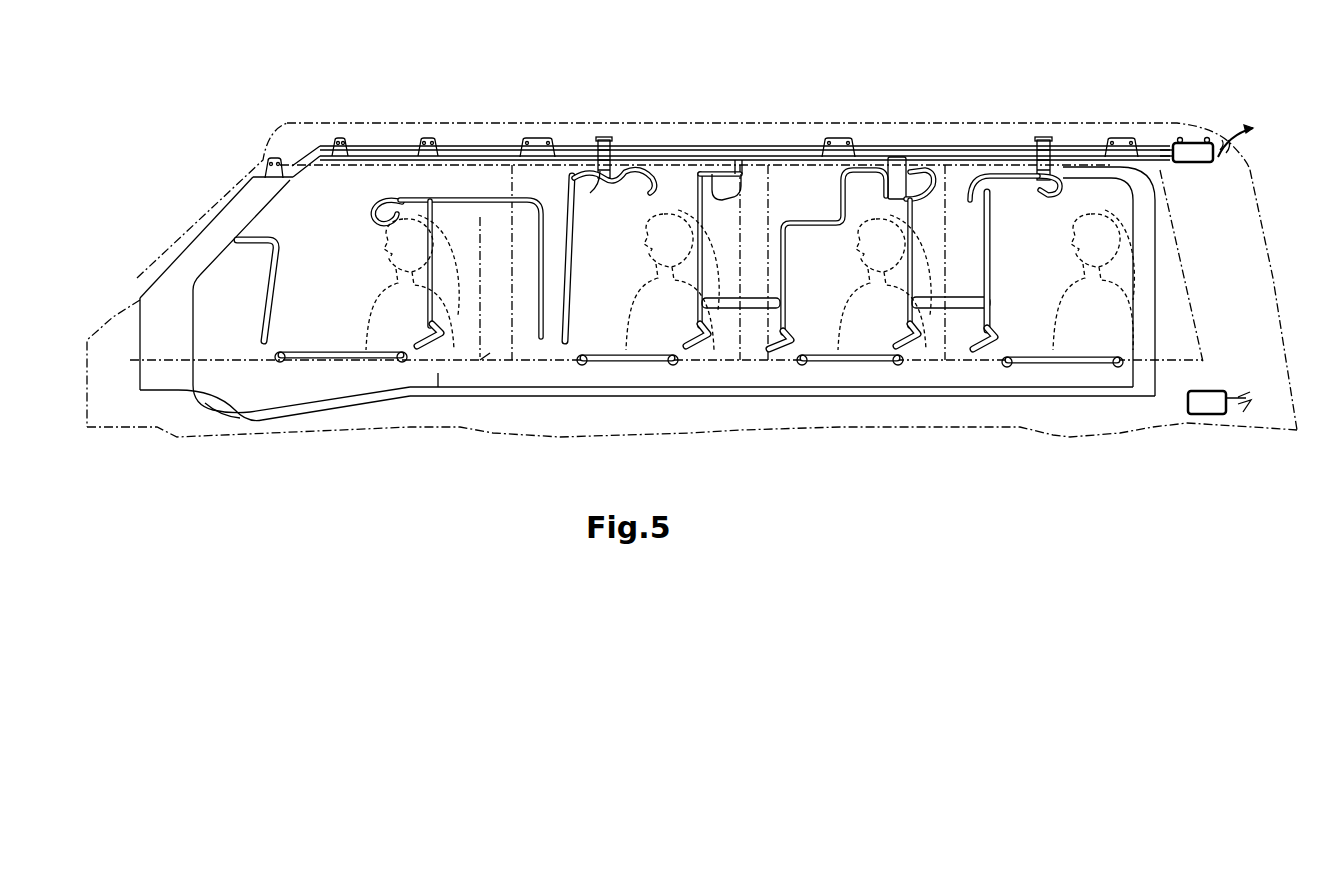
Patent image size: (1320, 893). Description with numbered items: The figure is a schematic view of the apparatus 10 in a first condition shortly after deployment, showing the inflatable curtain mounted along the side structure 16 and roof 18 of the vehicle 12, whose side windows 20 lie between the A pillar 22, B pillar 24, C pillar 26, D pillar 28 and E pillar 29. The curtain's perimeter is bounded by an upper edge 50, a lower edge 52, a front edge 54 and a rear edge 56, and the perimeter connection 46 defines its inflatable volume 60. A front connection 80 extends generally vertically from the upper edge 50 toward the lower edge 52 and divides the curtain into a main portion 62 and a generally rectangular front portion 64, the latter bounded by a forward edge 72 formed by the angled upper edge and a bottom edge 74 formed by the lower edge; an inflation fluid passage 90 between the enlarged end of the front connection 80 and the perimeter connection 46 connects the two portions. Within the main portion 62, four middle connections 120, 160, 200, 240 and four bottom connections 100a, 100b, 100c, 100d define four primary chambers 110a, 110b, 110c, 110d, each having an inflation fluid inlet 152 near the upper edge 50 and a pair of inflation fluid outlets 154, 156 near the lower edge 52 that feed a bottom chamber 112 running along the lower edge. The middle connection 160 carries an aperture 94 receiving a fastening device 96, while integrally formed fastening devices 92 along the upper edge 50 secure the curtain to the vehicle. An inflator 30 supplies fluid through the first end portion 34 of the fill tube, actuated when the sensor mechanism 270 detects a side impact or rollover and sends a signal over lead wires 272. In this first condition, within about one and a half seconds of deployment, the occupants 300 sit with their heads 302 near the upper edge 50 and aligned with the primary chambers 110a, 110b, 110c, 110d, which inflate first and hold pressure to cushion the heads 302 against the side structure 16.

The apparatus 10 is at (202, 107).
The vehicle 12 is at (202, 157).
The side structure 16 is at (542, 427).
The roof 18 is at (532, 123).
The side windows 20 is at (173, 340).
The A pillar 22 is at (173, 235).
The B pillar 24 is at (503, 233).
The C pillar 26 is at (785, 231).
The D pillar 28 is at (968, 277).
The E pillar 29 is at (1220, 243).
The inflator 30 is at (1193, 150).
The first end portion 34 is at (1162, 150).
The perimeter connection 46 is at (507, 393).
The upper edge 50 is at (630, 148).
The lower edge 52 is at (302, 413).
The front edge 54 is at (140, 315).
The rear edge 56 is at (1155, 280).
The inflatable volume 60 is at (490, 355).
The main portion 62 is at (660, 378).
The front portion 64 is at (220, 337).
The forward edge 72 is at (207, 223).
The bottom edge 74 is at (212, 420).
The front connection 80 is at (267, 312).
The inflation fluid passage 90 is at (247, 397).
The fastening device 92 is at (267, 170).
The aperture 94 is at (598, 184).
The fastening device 96 is at (605, 142).
The bottom connection 100a is at (365, 350).
The bottom connection 100b is at (623, 364).
The bottom connection 100c is at (853, 364).
The bottom connection 100d is at (1062, 368).
The primary inflatable chamber 110a is at (389, 222).
The primary inflatable chamber 110b is at (672, 295).
The primary inflatable chamber 110c is at (825, 289).
The primary inflatable chamber 110d is at (1043, 285).
The bottom chamber 112 is at (438, 373).
The middle connection 120 is at (477, 202).
The inflation fluid inlet 152 is at (333, 193).
The inflation fluid outlet 154 is at (273, 347).
The inflation fluid outlet 156 is at (413, 362).
The middle connection 160 is at (570, 254).
The middle connection 200 is at (803, 193).
The middle connection 240 is at (1005, 173).
The sensor mechanism 270 is at (1203, 407).
The lead wires 272 is at (1253, 449).
The occupants 300 is at (750, 352).
The heads 302 is at (407, 283).